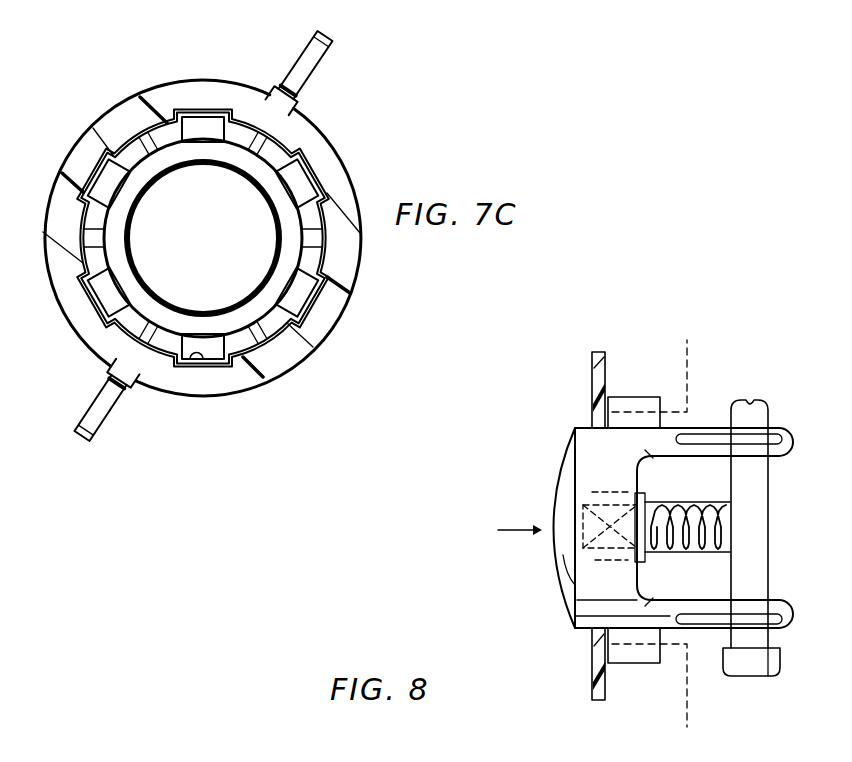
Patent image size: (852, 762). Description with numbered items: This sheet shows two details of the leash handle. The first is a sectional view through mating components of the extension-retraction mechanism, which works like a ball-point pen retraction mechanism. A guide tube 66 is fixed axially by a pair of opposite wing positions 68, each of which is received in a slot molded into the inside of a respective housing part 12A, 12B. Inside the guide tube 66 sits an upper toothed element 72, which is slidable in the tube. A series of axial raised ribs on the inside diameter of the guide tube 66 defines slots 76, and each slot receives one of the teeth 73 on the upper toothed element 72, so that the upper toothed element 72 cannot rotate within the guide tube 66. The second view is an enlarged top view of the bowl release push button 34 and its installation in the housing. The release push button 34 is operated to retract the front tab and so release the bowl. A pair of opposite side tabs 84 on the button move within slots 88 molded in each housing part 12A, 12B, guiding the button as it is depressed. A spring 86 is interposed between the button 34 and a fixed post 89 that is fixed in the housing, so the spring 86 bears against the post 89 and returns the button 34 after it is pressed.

In FIG. 7C, the guide tube 66 is at (347, 165).
In FIG. 7C, the wing positions 68 is at (324, 70).
In FIG. 7C, the upper toothed element 72 is at (130, 167).
In FIG. 7C, the teeth 73 is at (217, 120).
In FIG. 7C, the slots 76 is at (198, 363).
In FIG. 8, the housing part 12A is at (590, 372).
In FIG. 8, the housing part 12B is at (590, 667).
In FIG. 8, the release push button 34 is at (587, 450).
In FIG. 8, the side tabs 84 is at (637, 398).
In FIG. 8, the spring 86 is at (667, 505).
In FIG. 8, the slots 88 is at (708, 437).
In FIG. 8, the fixed post 89 is at (750, 413).